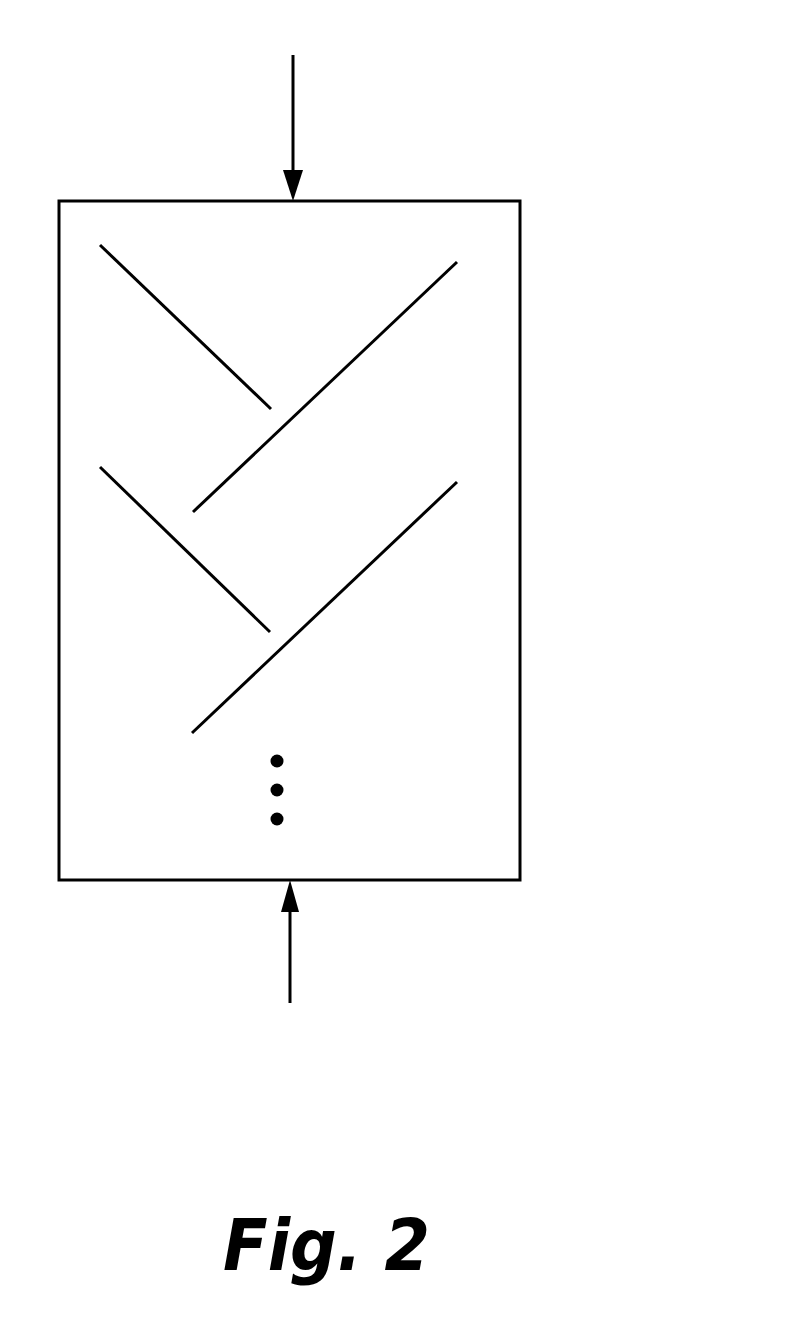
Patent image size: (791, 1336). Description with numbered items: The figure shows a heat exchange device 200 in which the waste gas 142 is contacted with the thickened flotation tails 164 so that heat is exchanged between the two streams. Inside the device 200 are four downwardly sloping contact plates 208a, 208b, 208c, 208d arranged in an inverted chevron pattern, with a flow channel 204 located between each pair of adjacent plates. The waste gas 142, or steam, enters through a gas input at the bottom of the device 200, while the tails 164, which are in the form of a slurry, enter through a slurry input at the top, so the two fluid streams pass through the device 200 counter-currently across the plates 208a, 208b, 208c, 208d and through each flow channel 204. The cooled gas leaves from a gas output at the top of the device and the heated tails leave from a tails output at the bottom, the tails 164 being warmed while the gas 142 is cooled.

The heat exchange device 200 is at (520, 343).
The thickened flotation tails 164 is at (345, 30).
The waste gas 142 is at (302, 1070).
The flow channel 204 is at (277, 417).
The contact plate 208a is at (168, 307).
The contact plate 208b is at (387, 332).
The contact plate 208c is at (153, 518).
The contact plate 208d is at (362, 572).